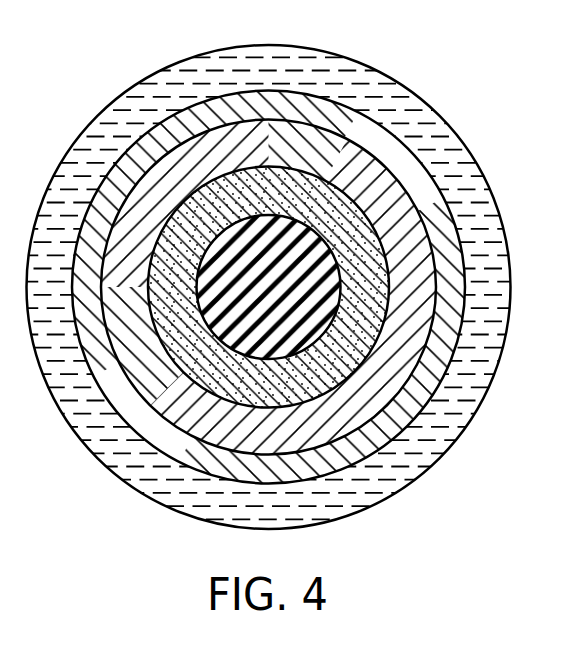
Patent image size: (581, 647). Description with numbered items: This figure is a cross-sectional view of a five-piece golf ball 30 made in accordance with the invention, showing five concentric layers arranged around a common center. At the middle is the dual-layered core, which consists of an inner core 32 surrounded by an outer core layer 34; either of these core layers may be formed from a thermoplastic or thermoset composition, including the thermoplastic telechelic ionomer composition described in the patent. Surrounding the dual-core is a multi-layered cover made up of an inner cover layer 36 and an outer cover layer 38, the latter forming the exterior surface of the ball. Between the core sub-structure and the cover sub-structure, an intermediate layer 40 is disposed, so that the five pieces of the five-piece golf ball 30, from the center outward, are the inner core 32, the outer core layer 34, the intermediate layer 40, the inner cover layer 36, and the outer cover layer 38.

The five-piece golf ball 30 is at (280, 277).
The inner core 32 is at (313, 257).
The outer core layer 34 is at (365, 272).
The inner cover layer 36 is at (437, 373).
The outer cover layer 38 is at (458, 416).
The intermediate layer 40 is at (416, 308).